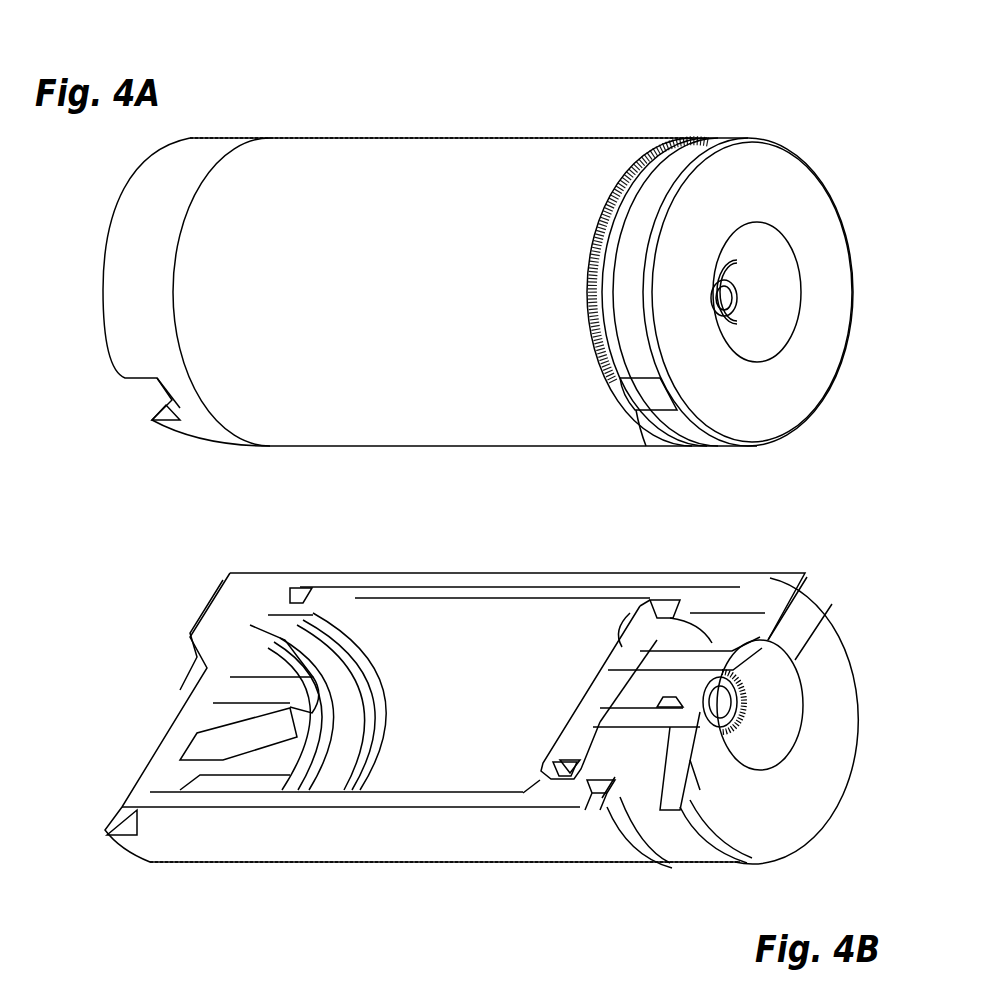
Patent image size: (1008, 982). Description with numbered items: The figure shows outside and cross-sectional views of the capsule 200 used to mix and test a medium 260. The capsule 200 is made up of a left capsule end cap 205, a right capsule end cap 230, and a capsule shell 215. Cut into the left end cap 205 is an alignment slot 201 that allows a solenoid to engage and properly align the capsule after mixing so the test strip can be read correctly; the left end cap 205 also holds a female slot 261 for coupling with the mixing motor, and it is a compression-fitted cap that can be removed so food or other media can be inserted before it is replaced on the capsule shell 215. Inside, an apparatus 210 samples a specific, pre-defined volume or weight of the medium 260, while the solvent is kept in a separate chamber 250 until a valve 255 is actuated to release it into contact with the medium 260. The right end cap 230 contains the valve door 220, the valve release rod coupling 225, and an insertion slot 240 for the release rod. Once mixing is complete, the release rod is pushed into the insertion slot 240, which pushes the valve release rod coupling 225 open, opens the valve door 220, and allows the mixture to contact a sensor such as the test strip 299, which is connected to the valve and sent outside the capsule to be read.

In FIG. 4A, the capsule 200 is at (458, 97).
In FIG. 4A, the alignment slot 201 is at (151, 397).
In FIG. 4B, the alignment slot 201 is at (130, 757).
In FIG. 4A, the left capsule end cap 205 is at (183, 375).
In FIG. 4B, the left capsule end cap 205 is at (216, 673).
In FIG. 4B, the apparatus 210 is at (253, 700).
In FIG. 4A, the capsule shell 215 is at (302, 327).
In FIG. 4B, the capsule shell 215 is at (320, 573).
In FIG. 4B, the valve door 220 is at (590, 720).
In FIG. 4B, the valve release rod coupling 225 is at (647, 682).
In FIG. 4A, the right capsule end cap 230 is at (593, 302).
In FIG. 4B, the right capsule end cap 230 is at (657, 572).
In FIG. 4A, the insertion slot 240 is at (735, 293).
In FIG. 4B, the insertion slot 240 is at (722, 697).
In FIG. 4B, the chamber 250 is at (379, 573).
In FIG. 4B, the valve 255 is at (412, 609).
In FIG. 4B, the medium 260 is at (474, 686).
In FIG. 4A, the female slot 261 is at (773, 292).
In FIG. 4B, the female slot 261 is at (773, 700).
In FIG. 4A, the test strip 299 is at (661, 422).
In FIG. 4B, the test strip 299 is at (673, 768).